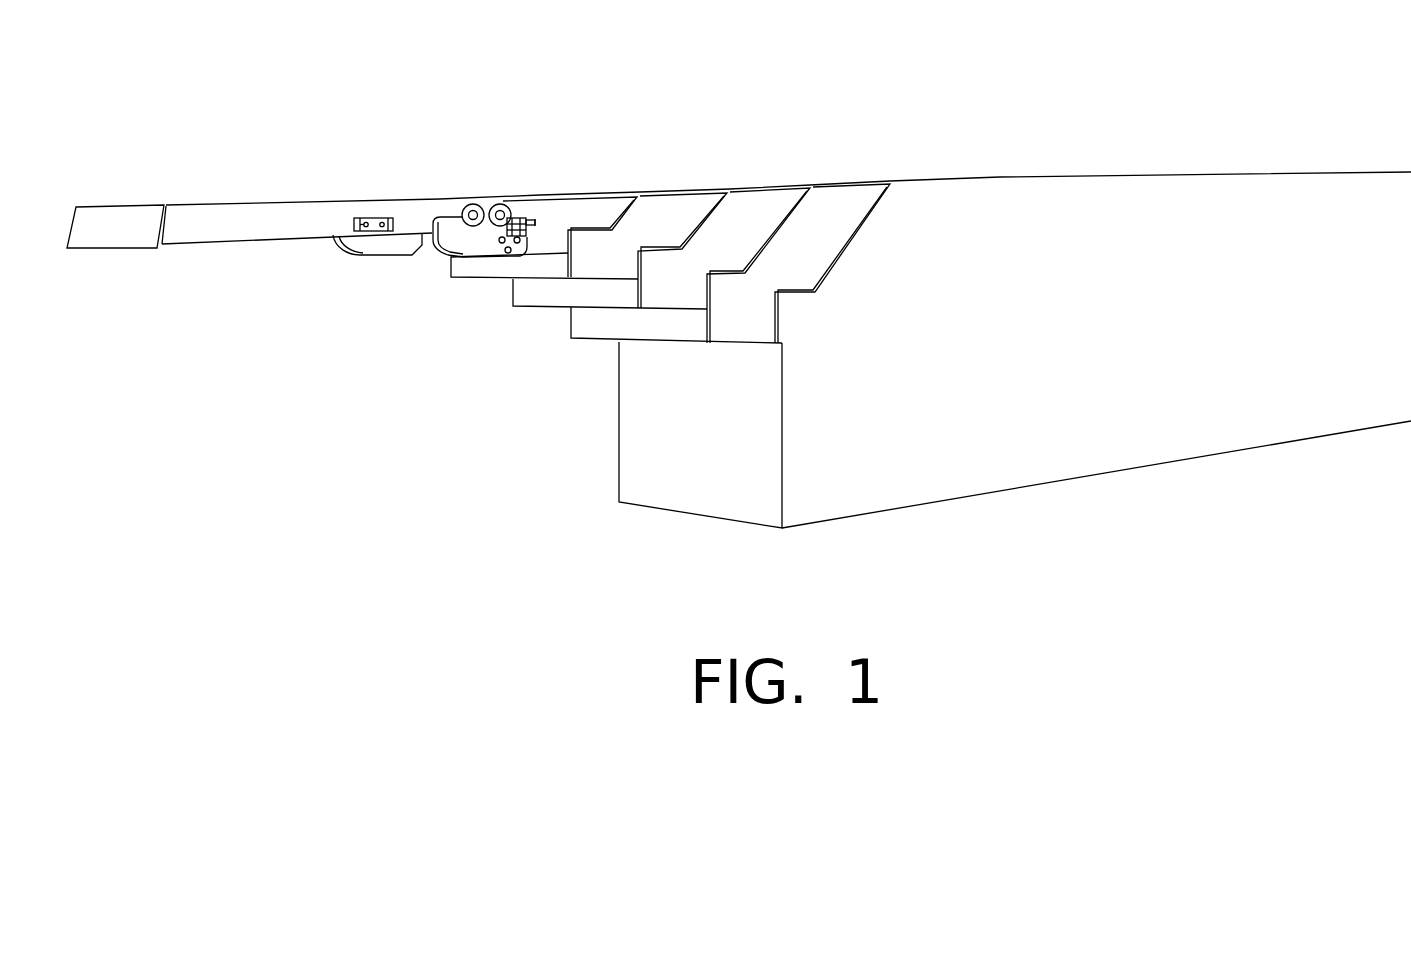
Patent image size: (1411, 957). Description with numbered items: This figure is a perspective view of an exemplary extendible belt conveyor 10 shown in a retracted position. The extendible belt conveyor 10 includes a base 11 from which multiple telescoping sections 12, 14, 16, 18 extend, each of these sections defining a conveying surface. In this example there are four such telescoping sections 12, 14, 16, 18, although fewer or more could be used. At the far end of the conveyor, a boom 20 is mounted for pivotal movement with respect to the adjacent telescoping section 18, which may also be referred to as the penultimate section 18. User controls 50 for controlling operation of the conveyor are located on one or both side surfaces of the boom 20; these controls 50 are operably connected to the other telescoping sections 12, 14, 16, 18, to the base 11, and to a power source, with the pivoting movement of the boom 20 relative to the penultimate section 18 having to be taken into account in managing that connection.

The extendible belt conveyor 10 is at (996, 112).
The base 11 is at (1090, 175).
The telescoping section 12 is at (840, 182).
The telescoping section 14 is at (775, 183).
The telescoping section 16 is at (697, 190).
The penultimate section 18 is at (560, 197).
The boom 20 is at (220, 210).
The user controls 50 is at (390, 233).